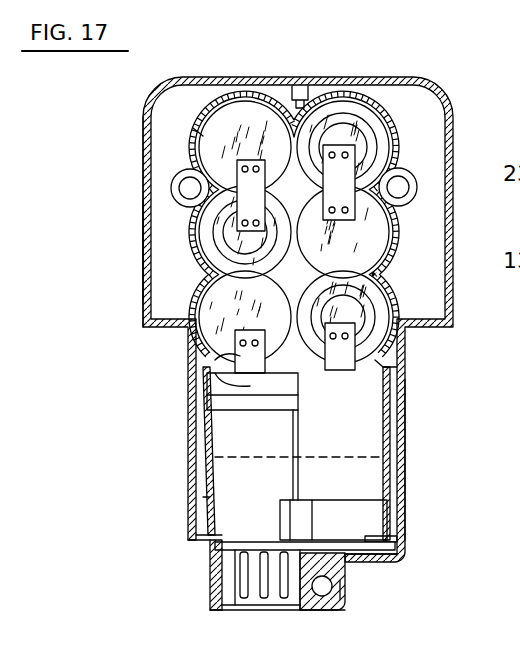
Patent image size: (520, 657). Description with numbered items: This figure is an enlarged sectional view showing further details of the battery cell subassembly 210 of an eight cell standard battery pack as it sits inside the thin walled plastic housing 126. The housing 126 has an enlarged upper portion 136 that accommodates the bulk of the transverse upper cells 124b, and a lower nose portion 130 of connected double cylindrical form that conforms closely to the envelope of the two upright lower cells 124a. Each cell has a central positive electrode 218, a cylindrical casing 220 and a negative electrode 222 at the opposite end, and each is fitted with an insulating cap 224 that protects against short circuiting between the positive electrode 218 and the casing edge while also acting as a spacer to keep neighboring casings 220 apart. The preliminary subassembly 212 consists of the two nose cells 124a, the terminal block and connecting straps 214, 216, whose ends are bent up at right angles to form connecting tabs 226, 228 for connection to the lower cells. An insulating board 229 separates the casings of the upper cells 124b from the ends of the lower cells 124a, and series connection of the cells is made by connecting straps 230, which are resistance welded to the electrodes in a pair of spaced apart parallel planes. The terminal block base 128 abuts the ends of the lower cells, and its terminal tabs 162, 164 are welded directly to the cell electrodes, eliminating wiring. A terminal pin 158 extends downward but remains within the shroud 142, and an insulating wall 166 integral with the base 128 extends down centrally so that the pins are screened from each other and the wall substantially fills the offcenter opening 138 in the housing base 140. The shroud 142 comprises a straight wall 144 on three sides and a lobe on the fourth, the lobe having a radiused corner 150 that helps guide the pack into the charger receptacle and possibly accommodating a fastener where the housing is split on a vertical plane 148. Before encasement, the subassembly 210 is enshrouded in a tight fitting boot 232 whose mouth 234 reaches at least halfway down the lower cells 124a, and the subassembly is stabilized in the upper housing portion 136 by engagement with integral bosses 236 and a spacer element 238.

The lower cells 124a is at (205, 497).
The upper cells 124b is at (197, 132).
The housing 126 is at (128, 208).
The terminal block base 128 is at (247, 533).
The nose portion 130 is at (205, 452).
The upper portion 136 is at (143, 262).
The opening 138 is at (205, 585).
The housing base 140 is at (387, 567).
The shroud 142 is at (196, 606).
The straight wall 144 is at (228, 605).
The vertical split plane 148 is at (345, 590).
The radiused corner 150 is at (345, 604).
The terminal pin 158 is at (320, 608).
The connecting tab 162 is at (392, 549).
The connecting tab 164 is at (212, 568).
The insulating wall 166 is at (247, 600).
The battery cell subassembly 210 is at (417, 110).
The preliminary subassembly 212 is at (397, 475).
The connecting strap 214 is at (385, 385).
The connecting strap 216 is at (207, 372).
The positive electrode 218 is at (335, 125).
The casing 220 is at (387, 497).
The negative electrode 222 is at (205, 541).
The insulating cap 224 is at (223, 398).
The connecting tab 226 is at (360, 345).
The connecting tab 228 is at (237, 330).
The insulating board 229 is at (215, 360).
The connecting straps 230 is at (243, 160).
The boot 232 is at (385, 272).
The mouth of boot 234 is at (205, 462).
The bosses 236 is at (175, 178).
The spacer element 238 is at (302, 90).